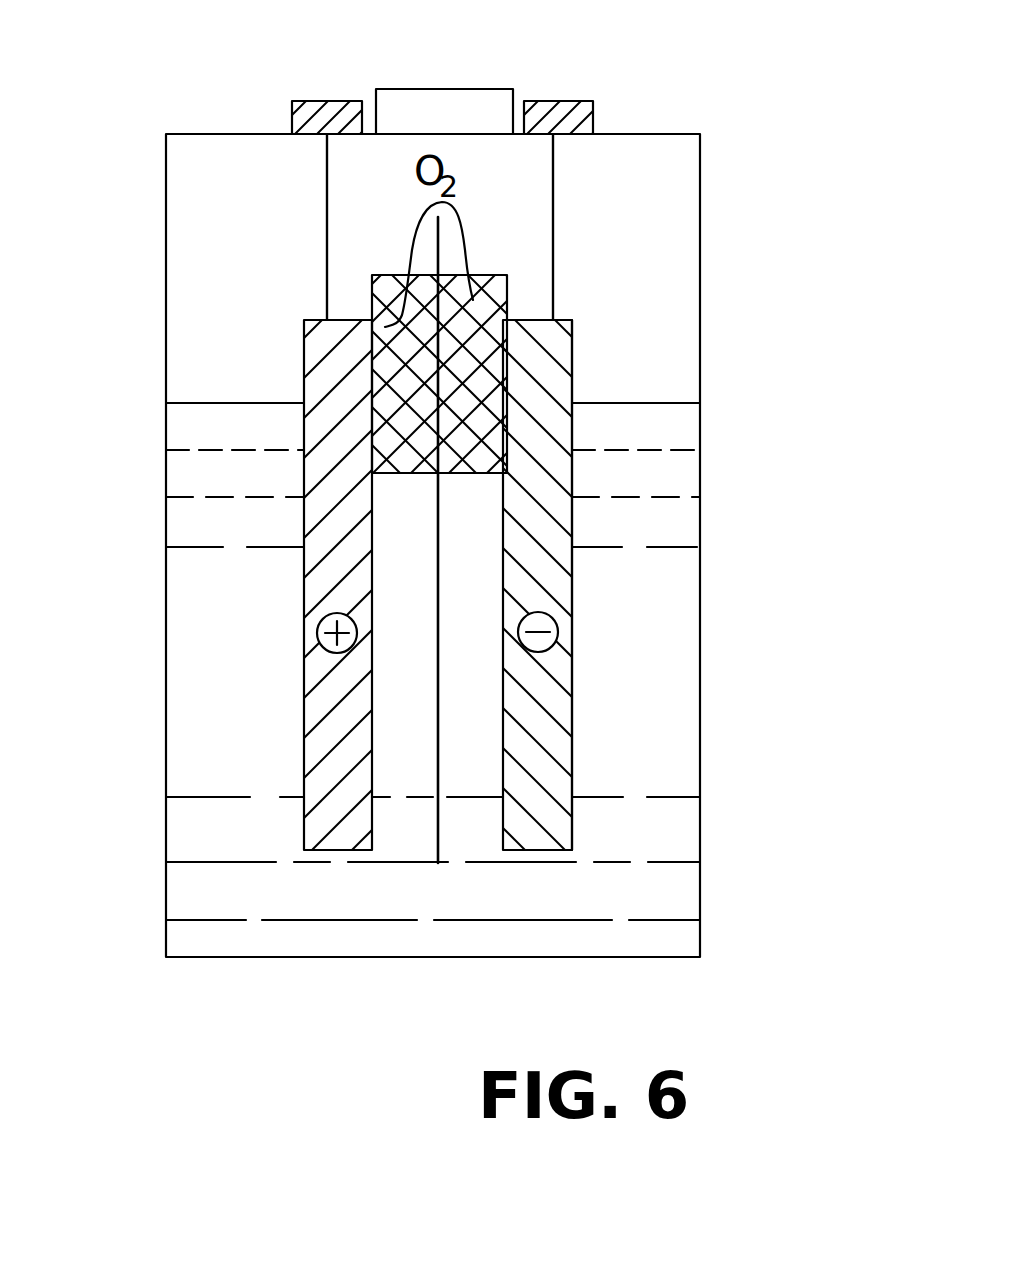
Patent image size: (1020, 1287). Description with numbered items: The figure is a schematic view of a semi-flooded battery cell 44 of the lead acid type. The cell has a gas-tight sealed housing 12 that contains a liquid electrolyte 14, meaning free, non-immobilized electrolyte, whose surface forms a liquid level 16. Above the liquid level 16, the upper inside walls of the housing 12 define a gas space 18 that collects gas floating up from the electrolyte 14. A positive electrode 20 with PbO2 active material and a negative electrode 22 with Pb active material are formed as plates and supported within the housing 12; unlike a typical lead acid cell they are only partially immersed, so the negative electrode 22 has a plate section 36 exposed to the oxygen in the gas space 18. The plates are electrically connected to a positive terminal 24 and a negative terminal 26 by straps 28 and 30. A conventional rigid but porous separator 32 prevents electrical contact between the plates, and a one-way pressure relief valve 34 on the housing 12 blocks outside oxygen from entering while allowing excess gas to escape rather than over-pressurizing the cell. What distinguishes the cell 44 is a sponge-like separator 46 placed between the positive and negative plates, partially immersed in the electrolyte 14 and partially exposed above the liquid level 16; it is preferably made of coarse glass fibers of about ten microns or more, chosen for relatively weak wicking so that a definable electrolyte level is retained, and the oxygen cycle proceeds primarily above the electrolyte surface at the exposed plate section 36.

The sealed housing 12 is at (700, 457).
The liquid electrolyte 14 is at (653, 535).
The liquid level 16 is at (633, 403).
The gas space 18 is at (202, 323).
The positive electrode 20 is at (305, 787).
The negative electrode 22 is at (572, 833).
The positive terminal 24 is at (302, 100).
The negative terminal 26 is at (593, 119).
The strap 28 is at (325, 174).
The strap 30 is at (555, 207).
The rigid porous separator 32 is at (437, 845).
The one-way pressure relief valve 34 is at (418, 88).
The plate section 36 is at (573, 360).
The semi-flooded battery cell 44 is at (712, 597).
The sponge-like separator 46 is at (480, 295).